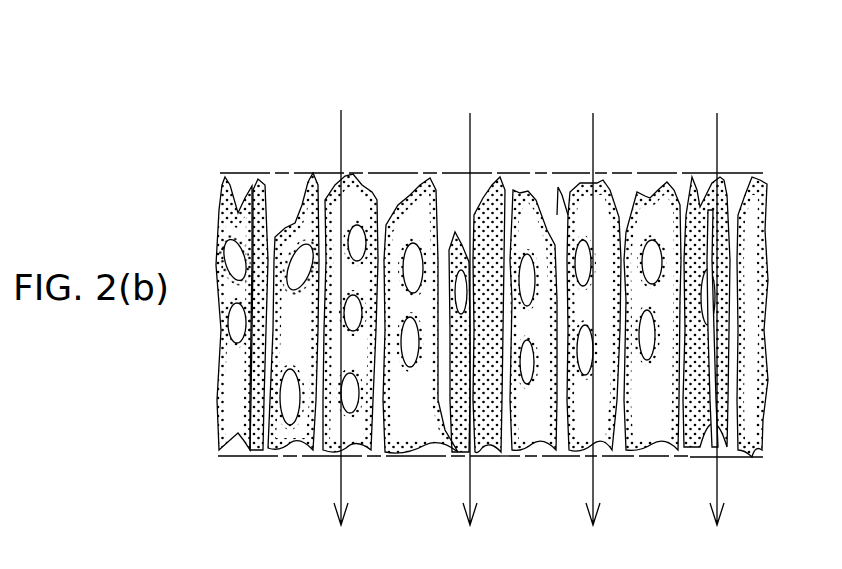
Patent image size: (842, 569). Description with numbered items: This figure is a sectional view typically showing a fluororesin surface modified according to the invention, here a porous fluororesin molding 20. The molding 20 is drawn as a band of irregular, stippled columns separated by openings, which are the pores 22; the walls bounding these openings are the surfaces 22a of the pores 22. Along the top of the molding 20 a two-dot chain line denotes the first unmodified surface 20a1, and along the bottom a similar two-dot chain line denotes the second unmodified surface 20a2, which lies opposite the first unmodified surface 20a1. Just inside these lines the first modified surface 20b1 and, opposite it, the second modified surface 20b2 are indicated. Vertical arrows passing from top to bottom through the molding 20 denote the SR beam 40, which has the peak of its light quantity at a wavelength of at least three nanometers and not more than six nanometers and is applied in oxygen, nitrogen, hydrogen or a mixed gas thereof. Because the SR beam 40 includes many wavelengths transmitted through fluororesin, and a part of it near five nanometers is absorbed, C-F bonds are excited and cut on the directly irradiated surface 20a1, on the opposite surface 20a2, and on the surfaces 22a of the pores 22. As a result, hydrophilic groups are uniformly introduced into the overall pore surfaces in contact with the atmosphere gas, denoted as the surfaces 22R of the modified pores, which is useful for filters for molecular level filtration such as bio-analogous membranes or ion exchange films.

The porous fluororesin molding 20 is at (762, 108).
The pores 22 is at (306, 170).
The surfaces of the pores 22a is at (378, 228).
The surfaces of modified pores 22R is at (248, 288).
The SR beam 40 is at (346, 128).
The first modified surface 20b1 is at (535, 173).
The second modified surface 20b2 is at (524, 458).
The first unmodified surface 20a1 is at (653, 173).
The second unmodified surface 20a2 is at (637, 460).